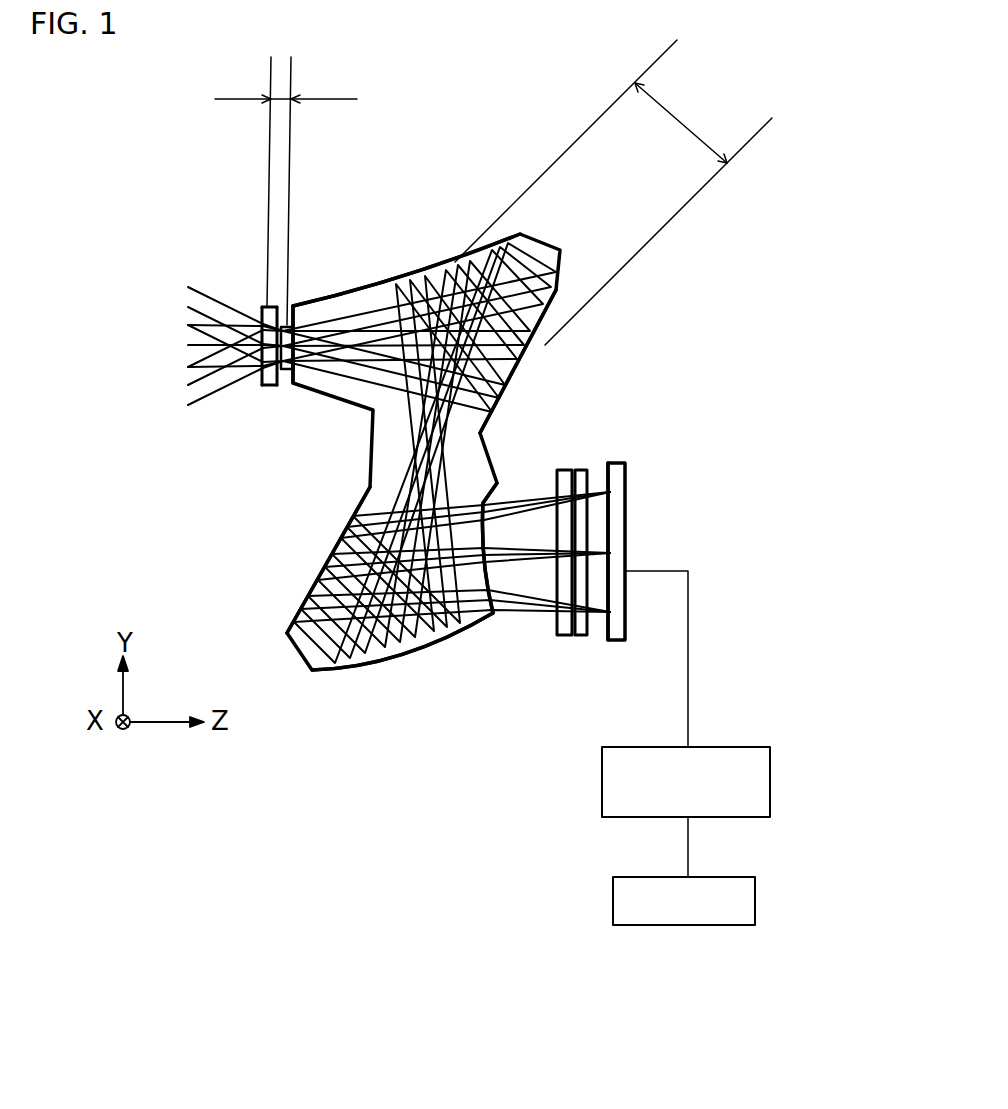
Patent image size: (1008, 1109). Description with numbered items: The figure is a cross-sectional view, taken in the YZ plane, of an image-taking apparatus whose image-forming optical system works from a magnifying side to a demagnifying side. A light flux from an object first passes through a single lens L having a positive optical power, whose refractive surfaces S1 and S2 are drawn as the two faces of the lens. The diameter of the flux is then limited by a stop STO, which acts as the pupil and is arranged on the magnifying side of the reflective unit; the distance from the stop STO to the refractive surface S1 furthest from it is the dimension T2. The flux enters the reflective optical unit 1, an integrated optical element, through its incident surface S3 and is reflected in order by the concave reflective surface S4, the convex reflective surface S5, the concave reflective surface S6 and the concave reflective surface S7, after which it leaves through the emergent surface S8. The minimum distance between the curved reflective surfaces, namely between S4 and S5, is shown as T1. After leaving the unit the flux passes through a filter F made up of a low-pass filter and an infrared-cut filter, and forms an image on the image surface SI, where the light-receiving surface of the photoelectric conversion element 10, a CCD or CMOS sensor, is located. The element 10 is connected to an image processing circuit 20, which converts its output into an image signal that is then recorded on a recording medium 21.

The reflective optical unit 1 is at (513, 267).
The photoelectric conversion element 10 is at (627, 487).
The image processing circuit 20 is at (745, 746).
The recording medium 21 is at (733, 925).
The refractive surface S1 is at (262, 307).
The second lens surface S2 is at (274, 385).
The incident surface S3 is at (287, 371).
The concave reflective surface S4 is at (538, 320).
The convex reflective surface S5 is at (480, 250).
The concave reflective surface S6 is at (395, 660).
The concave reflective surface S7 is at (338, 540).
The emergent surface S8 is at (498, 484).
The stop STO is at (290, 326).
The single lens L is at (190, 403).
The filter F is at (565, 637).
The image surface SI is at (613, 642).
The minimum distance between the curved optical surfaces T1 is at (613, 192).
The distance from the pupil to the optical surface of the single lens furthest from T2 is at (308, 191).